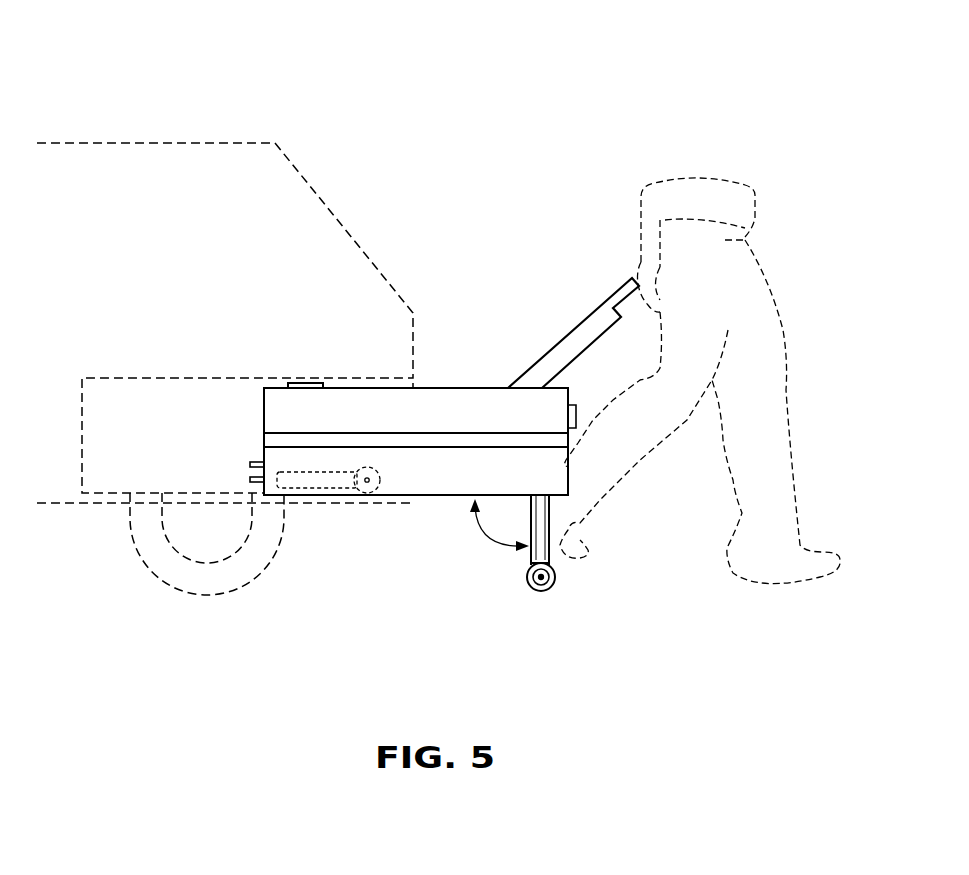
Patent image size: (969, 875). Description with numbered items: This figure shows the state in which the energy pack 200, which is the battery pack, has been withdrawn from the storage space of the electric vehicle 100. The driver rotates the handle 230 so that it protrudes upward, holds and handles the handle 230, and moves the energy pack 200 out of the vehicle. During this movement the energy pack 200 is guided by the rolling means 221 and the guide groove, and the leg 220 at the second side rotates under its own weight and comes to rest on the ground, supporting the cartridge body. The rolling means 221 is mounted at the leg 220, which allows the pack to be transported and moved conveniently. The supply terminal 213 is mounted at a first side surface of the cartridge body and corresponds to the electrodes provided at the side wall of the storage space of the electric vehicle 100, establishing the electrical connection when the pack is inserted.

The electric vehicle 100 is at (154, 130).
The energy pack 200 is at (439, 449).
The supply terminal 213 is at (254, 482).
The leg 220 is at (545, 543).
The rolling means 221 is at (533, 591).
The handle 230 is at (607, 306).